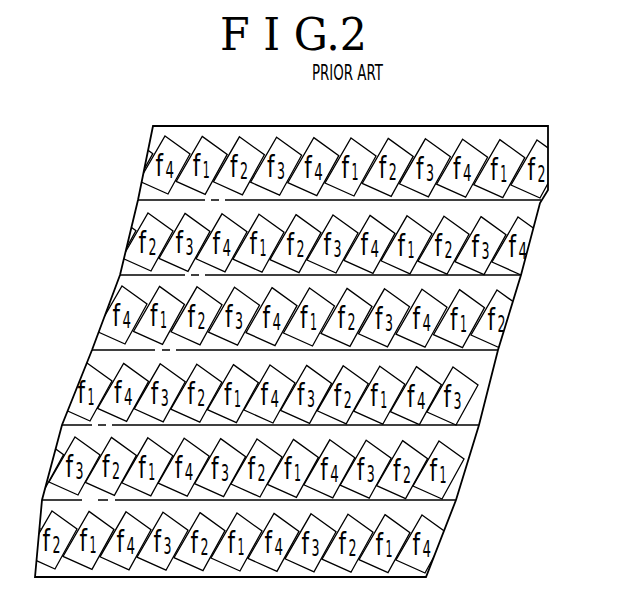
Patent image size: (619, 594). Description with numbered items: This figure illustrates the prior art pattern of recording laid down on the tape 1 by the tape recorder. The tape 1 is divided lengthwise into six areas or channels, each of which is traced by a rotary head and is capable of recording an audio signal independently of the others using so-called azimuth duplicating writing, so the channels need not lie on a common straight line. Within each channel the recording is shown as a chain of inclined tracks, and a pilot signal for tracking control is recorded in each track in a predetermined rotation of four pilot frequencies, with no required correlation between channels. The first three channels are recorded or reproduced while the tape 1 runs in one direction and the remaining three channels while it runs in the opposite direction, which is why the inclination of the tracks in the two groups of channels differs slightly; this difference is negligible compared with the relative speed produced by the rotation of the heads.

The tape 1 is at (225, 126).